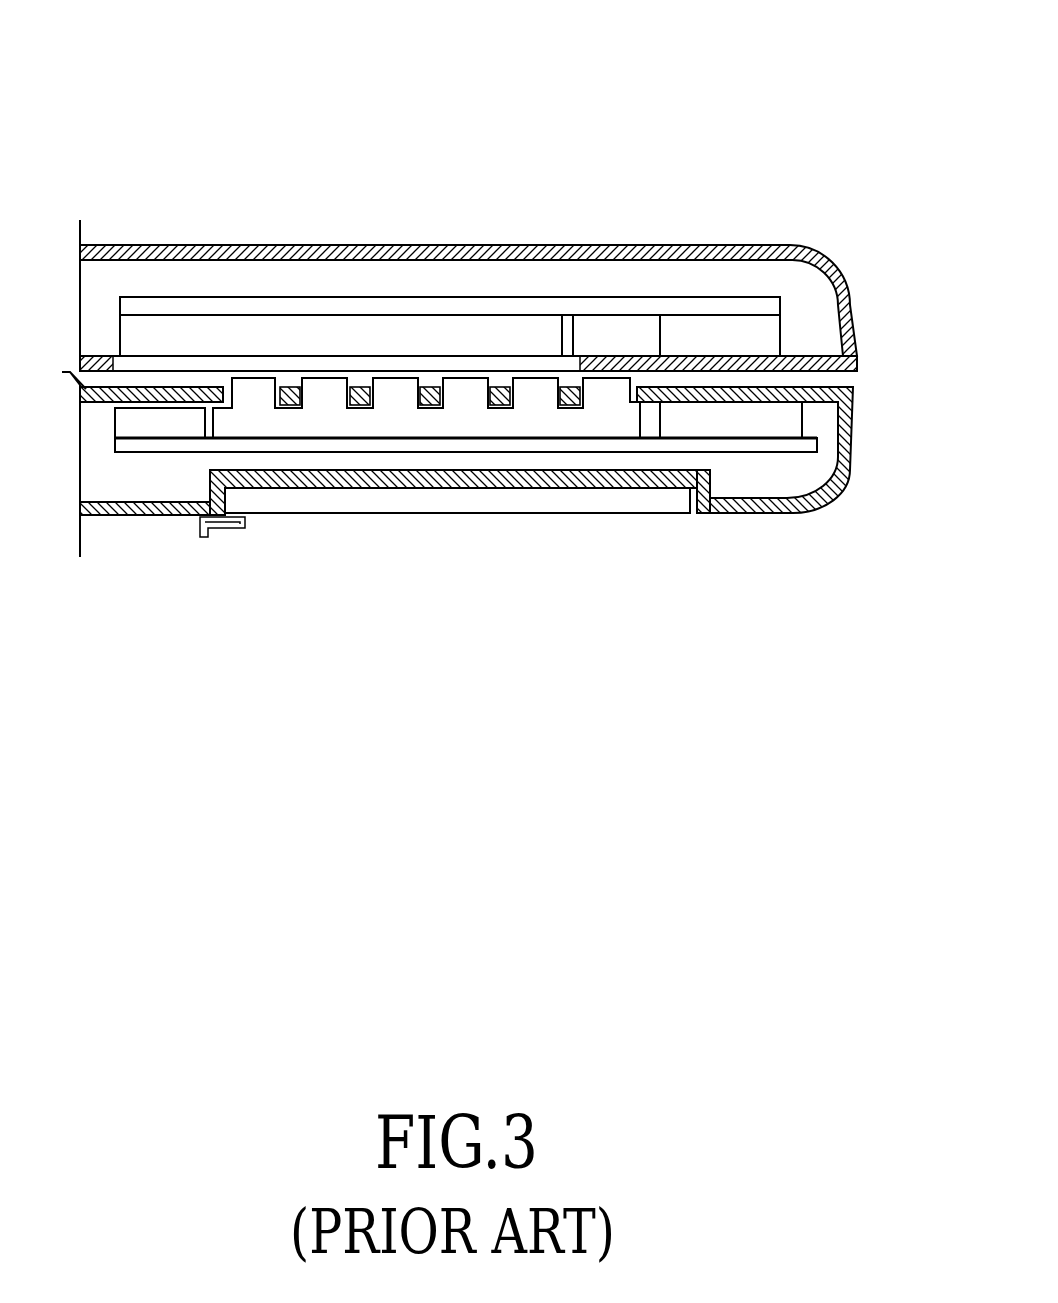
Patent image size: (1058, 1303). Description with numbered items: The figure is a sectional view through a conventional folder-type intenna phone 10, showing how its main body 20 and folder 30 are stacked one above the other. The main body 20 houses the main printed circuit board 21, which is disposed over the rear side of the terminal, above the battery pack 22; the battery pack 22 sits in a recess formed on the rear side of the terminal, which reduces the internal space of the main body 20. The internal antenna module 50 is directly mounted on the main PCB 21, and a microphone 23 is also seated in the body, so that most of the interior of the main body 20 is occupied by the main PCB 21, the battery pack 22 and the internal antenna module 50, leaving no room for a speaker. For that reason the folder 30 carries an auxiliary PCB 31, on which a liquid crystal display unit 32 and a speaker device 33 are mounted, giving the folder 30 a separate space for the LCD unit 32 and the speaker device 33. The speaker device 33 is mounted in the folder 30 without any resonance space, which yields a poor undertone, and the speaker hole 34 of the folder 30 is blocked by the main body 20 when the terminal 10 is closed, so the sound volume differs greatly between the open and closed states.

The intenna phone 10 is at (592, 87).
The main body 20 is at (825, 503).
The main printed circuit board 21 is at (812, 448).
The battery pack 22 is at (508, 503).
The microphone 23 is at (785, 422).
The folder 30 is at (293, 245).
The auxiliary printed circuit board 31 is at (510, 305).
The liquid crystal display unit 32 is at (412, 332).
The speaker device 33 is at (720, 333).
The speaker hole 34 is at (733, 356).
The internal antenna module 50 is at (150, 420).